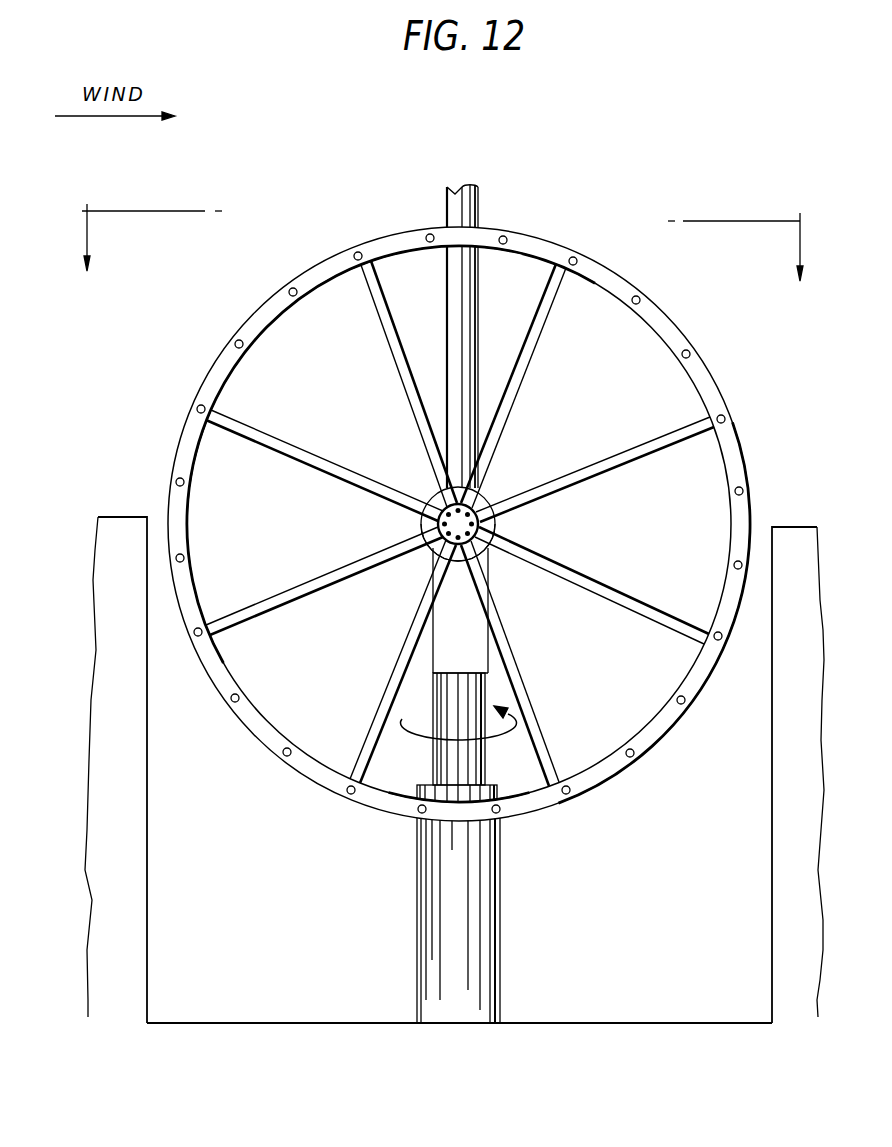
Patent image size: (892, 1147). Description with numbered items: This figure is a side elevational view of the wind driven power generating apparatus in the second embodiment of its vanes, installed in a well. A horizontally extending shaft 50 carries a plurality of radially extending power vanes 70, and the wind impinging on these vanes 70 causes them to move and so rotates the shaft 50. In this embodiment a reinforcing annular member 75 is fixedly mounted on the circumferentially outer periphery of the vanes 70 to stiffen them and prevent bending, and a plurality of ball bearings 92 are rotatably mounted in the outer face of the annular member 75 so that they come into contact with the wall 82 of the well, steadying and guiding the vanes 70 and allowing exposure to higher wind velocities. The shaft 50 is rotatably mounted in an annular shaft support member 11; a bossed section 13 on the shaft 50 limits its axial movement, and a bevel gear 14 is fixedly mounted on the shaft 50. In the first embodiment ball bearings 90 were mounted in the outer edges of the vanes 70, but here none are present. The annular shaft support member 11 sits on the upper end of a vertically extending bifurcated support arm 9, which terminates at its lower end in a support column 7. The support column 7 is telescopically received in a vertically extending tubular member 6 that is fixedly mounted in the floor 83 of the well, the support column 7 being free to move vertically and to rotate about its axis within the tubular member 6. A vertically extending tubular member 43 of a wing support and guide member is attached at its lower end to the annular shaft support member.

The bossed section 13 is at (441, 242).
The reinforcing annular member 75 is at (670, 320).
The ball bearings 92 is at (692, 354).
The power vanes 70 is at (404, 388).
The tubular member 43 is at (478, 218).
The shaft 50 is at (484, 494).
The annular shaft support member 11 is at (430, 558).
The bevel gear 14 is at (505, 527).
The ball bearings 90 is at (440, 521).
The support arm 9 is at (478, 613).
The support column 7 is at (435, 700).
The tubular member 6 is at (500, 876).
The wall 82 is at (148, 826).
The floor 83 is at (595, 1022).